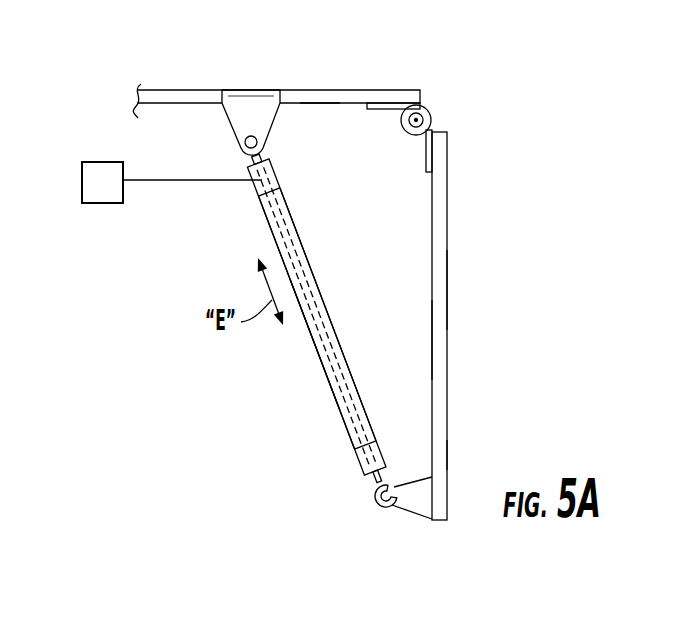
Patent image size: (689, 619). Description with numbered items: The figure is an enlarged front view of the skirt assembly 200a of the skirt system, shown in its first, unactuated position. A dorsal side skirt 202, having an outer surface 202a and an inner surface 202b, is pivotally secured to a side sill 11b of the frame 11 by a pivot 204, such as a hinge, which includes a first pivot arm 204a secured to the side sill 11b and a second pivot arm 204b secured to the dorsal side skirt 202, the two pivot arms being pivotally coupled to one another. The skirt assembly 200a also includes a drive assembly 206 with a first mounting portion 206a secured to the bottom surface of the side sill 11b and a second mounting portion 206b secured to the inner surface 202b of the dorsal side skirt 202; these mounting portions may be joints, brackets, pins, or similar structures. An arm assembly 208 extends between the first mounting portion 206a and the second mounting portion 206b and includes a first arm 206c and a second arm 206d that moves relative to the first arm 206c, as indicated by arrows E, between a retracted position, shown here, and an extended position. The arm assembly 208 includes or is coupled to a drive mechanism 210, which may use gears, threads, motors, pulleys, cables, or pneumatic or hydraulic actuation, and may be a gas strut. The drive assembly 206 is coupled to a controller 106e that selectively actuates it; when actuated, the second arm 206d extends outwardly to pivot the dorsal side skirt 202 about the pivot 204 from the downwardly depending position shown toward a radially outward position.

The frame 11 is at (345, 85).
The side sill 11b is at (303, 93).
The pivot 204 is at (438, 108).
The first pivot arm 204a is at (381, 105).
The second pivot arm 204b is at (428, 153).
The dorsal side skirt 202 is at (455, 210).
The outer surface 202a is at (447, 290).
The inner surface 202b is at (432, 335).
The skirt assembly 200a is at (490, 454).
The drive assembly 206 is at (258, 220).
The first mounting portion 206a is at (238, 96).
The second mounting portion 206b is at (418, 505).
The first arm 206c is at (328, 368).
The second arm 206d is at (378, 485).
The arm assembly 208 is at (335, 318).
The drive mechanism 210 is at (296, 226).
The controller 106e is at (100, 196).